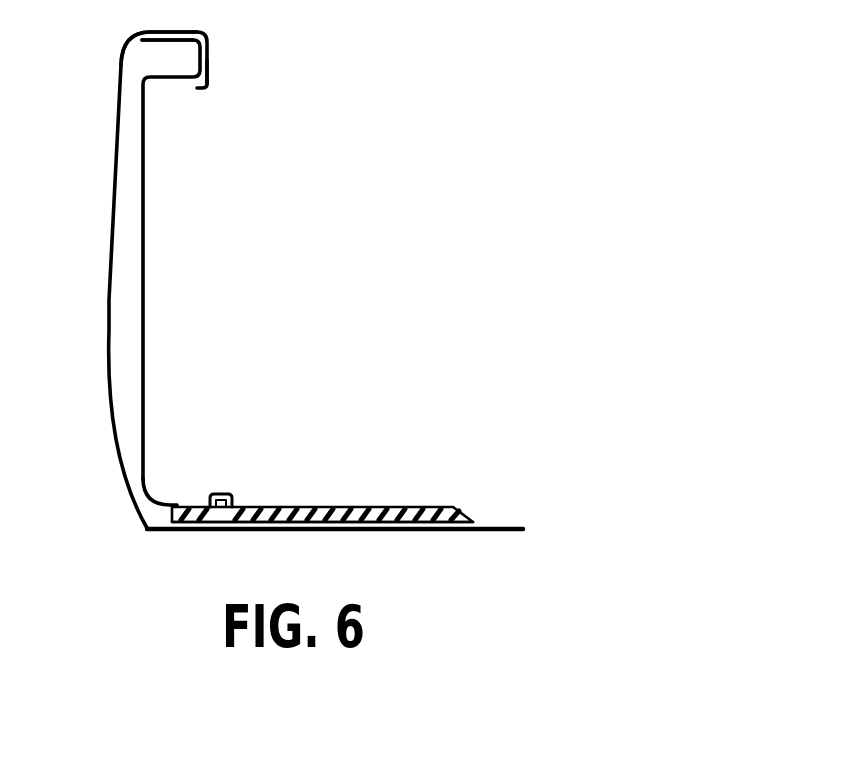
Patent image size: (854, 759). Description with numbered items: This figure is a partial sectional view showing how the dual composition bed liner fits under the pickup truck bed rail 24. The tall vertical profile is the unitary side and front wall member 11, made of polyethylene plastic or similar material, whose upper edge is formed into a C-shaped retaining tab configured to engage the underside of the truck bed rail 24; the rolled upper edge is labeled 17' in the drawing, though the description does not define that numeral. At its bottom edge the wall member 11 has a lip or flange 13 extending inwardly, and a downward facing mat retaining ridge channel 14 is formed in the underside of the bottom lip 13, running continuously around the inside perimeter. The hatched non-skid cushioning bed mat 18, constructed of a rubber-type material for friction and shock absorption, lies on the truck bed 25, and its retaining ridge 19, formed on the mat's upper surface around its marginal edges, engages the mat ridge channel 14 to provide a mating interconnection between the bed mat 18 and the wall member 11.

The unitary side and front wall member 11 is at (143, 225).
The lip or flange 13 is at (172, 506).
The mat retaining ridge channel 14 is at (222, 495).
The rolled top edge 17' is at (127, 55).
The non-skid cushioning bed mat 18 is at (360, 508).
The retaining ridge 19 is at (218, 532).
The truck bed rail 24 is at (207, 76).
The truck bed 25 is at (342, 532).